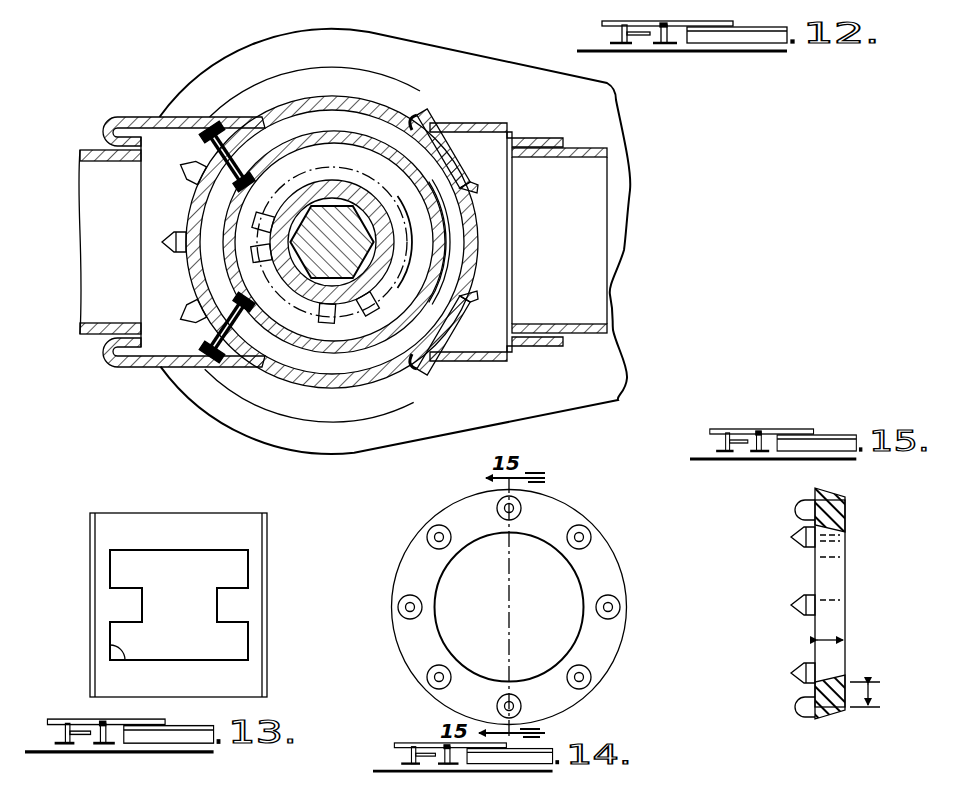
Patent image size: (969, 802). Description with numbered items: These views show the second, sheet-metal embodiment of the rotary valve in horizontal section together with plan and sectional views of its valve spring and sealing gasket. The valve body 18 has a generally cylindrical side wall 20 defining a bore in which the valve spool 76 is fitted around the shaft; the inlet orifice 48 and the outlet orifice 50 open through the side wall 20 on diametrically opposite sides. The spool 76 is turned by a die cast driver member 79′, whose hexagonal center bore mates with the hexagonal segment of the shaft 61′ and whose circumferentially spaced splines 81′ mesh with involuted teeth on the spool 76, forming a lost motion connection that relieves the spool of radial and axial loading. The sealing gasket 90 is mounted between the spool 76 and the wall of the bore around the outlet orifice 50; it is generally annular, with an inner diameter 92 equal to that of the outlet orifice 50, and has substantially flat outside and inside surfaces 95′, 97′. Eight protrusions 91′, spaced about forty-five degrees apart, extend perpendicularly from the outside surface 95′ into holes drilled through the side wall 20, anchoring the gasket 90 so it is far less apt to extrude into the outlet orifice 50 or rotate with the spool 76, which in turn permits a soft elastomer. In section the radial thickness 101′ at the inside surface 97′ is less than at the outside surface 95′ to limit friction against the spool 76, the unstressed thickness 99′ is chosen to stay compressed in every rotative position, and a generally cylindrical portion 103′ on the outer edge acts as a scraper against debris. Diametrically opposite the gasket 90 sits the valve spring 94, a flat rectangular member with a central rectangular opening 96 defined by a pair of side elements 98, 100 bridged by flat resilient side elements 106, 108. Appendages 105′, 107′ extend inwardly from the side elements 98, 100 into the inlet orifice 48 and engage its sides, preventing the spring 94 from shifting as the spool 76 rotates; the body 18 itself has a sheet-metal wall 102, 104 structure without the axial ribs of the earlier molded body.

In FIG. 12, the valve body 18 is at (388, 104).
In FIG. 12, the side wall 20 is at (240, 368).
In FIG. 12, the inlet orifice 48 is at (478, 202).
In FIG. 12, the outlet orifice 50 is at (198, 188).
In FIG. 12, the hexagonal shaft 61′ is at (325, 208).
In FIG. 12, the spool 76 is at (362, 356).
In FIG. 12, the driver member 79′ is at (373, 198).
In FIG. 12, the splines 81′ is at (255, 232).
In FIG. 12, the sealing gasket 90 is at (246, 367).
In FIG. 14, the sealing gasket 90 is at (396, 557).
In FIG. 12, the protrusions 91′ is at (220, 134).
In FIG. 14, the protrusions 91′ is at (440, 524).
In FIG. 15, the protrusions 91′ is at (795, 512).
In FIG. 14, the inner diameter 92 is at (497, 534).
In FIG. 15, the inner diameter 92 is at (838, 536).
In FIG. 12, the valve spring 94 is at (455, 265).
In FIG. 13, the valve spring 94 is at (268, 540).
In FIG. 14, the outside surface 95′ is at (600, 660).
In FIG. 15, the outside surface 95′ is at (814, 570).
In FIG. 13, the central rectangular opening 96 is at (118, 652).
In FIG. 15, the inside surface 97′ is at (848, 593).
In FIG. 13, the side element 98 is at (255, 605).
In FIG. 15, the unstressed thickness 99′ is at (840, 640).
In FIG. 13, the side element 100 is at (96, 618).
In FIG. 15, the radial thickness at inner surface 101′ is at (870, 688).
In FIG. 12, the end wall 102 is at (410, 356).
In FIG. 13, the end wall 102 is at (268, 658).
In FIG. 15, the cylindrical portion 103′ is at (843, 498).
In FIG. 12, the side wall / retaining spring 104 is at (412, 122).
In FIG. 13, the side wall / retaining spring 104 is at (90, 568).
In FIG. 12, the appendage 105′ is at (478, 310).
In FIG. 13, the appendage 105′ is at (214, 608).
In FIG. 13, the resilient side element 106 is at (182, 522).
In FIG. 12, the appendage 107′ is at (462, 180).
In FIG. 13, the appendage 107′ is at (144, 606).
In FIG. 12, the resilient side element 108 is at (468, 240).
In FIG. 13, the resilient side element 108 is at (150, 682).